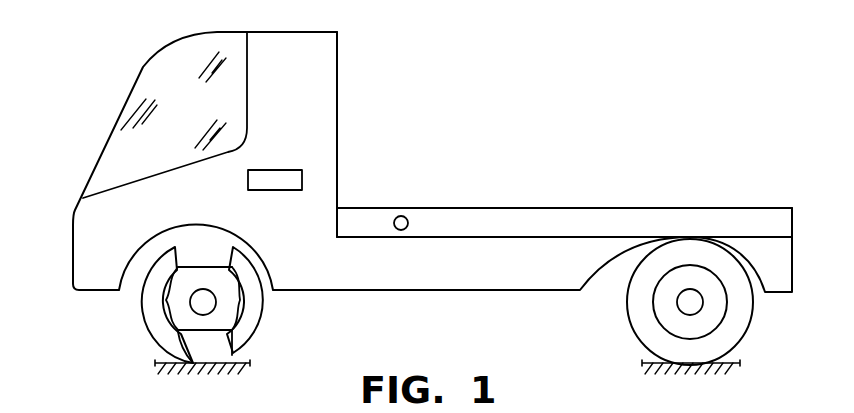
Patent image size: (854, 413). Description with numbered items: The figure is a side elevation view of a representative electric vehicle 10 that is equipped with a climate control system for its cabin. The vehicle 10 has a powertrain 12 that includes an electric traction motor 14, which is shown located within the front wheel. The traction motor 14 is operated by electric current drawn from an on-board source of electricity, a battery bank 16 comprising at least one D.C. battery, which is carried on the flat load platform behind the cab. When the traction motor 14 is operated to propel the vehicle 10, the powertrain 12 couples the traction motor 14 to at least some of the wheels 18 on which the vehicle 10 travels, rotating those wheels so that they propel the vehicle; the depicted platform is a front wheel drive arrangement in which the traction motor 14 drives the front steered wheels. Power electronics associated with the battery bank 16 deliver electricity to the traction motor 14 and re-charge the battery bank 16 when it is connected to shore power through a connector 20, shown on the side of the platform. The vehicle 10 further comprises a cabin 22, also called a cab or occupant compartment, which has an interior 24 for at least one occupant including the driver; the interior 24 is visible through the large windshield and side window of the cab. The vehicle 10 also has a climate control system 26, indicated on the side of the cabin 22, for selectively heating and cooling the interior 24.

The electric vehicle 10 is at (122, 92).
The powertrain 12 is at (200, 262).
The electric traction motor 14 is at (218, 270).
The battery bank 16 is at (470, 216).
The wheels 18 is at (262, 318).
The connector 20 is at (406, 217).
The cabin 22 is at (337, 93).
The interior 24 is at (178, 136).
The climate control system 26 is at (302, 170).